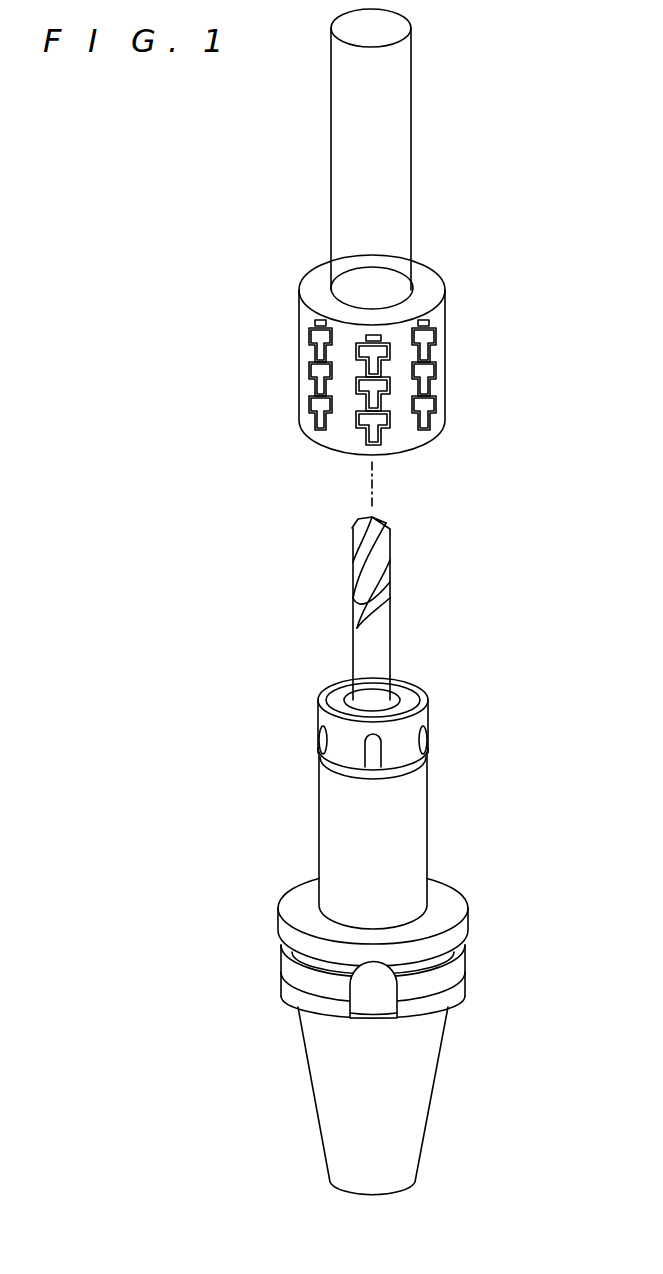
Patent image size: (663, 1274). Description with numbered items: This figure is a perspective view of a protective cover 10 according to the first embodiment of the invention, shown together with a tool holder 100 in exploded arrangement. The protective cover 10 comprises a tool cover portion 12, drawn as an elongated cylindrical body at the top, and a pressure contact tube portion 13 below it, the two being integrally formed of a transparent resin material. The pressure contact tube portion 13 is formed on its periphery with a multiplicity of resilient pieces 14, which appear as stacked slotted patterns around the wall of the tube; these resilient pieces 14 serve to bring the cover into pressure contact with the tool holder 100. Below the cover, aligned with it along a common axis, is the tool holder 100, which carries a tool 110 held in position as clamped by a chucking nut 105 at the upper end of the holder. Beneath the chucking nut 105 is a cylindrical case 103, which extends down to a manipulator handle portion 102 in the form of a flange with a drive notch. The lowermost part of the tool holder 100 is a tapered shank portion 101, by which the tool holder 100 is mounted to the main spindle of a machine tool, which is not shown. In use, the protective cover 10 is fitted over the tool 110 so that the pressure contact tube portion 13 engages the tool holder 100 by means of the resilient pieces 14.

The protective cover 10 is at (435, 201).
The tool cover portion 12 is at (402, 94).
The pressure contact tube portion 13 is at (438, 329).
The resilient pieces 14 is at (318, 340).
The tool 110 is at (360, 538).
The tool holder 100 is at (443, 810).
The chucking nut 105 is at (318, 715).
The cylindrical case 103 is at (322, 810).
The manipulator handle portion 102 is at (466, 930).
The tapered shank portion 101 is at (423, 1088).